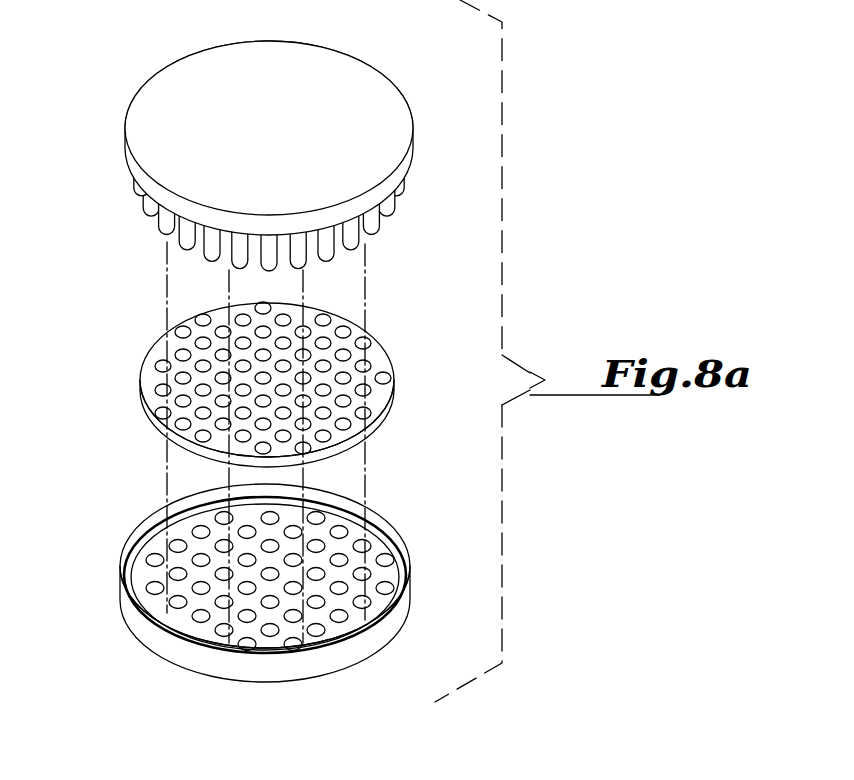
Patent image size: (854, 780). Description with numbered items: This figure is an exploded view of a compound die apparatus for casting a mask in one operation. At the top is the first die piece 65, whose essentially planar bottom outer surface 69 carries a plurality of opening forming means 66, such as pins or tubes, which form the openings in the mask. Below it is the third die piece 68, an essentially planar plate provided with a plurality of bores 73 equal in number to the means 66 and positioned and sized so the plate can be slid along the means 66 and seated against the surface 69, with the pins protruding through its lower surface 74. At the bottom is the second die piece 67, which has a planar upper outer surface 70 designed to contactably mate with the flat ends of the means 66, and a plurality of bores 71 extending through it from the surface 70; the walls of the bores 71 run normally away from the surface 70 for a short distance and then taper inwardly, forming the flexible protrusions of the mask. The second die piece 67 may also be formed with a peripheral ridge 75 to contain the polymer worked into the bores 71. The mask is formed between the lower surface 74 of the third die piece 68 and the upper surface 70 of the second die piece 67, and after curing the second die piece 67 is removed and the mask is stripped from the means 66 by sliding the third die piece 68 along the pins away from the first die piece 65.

The first die piece 65 is at (140, 133).
The opening forming means 66 is at (263, 218).
The bottom outer surface 69 is at (147, 214).
The third die piece 68 is at (279, 395).
The bores 73 is at (370, 370).
The lower surface 74 is at (157, 432).
The second die piece 67 is at (247, 600).
The ridge 75 is at (368, 527).
The upper outer surface 70 is at (325, 622).
The bores 71 is at (147, 587).